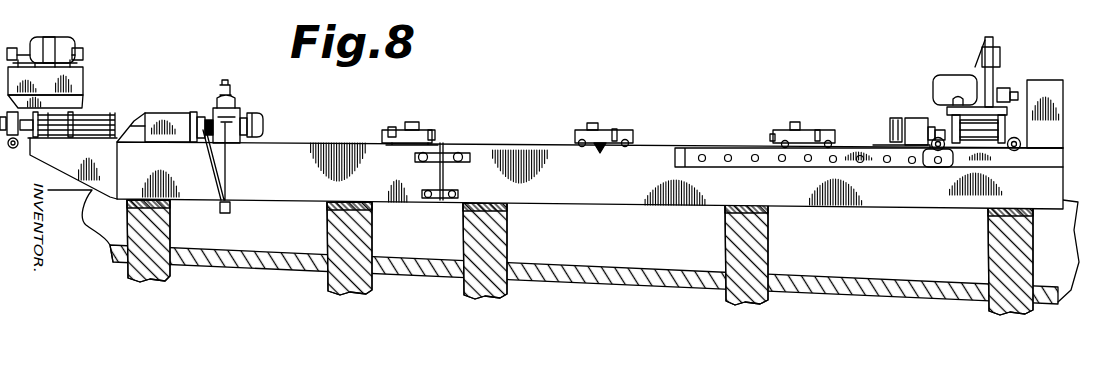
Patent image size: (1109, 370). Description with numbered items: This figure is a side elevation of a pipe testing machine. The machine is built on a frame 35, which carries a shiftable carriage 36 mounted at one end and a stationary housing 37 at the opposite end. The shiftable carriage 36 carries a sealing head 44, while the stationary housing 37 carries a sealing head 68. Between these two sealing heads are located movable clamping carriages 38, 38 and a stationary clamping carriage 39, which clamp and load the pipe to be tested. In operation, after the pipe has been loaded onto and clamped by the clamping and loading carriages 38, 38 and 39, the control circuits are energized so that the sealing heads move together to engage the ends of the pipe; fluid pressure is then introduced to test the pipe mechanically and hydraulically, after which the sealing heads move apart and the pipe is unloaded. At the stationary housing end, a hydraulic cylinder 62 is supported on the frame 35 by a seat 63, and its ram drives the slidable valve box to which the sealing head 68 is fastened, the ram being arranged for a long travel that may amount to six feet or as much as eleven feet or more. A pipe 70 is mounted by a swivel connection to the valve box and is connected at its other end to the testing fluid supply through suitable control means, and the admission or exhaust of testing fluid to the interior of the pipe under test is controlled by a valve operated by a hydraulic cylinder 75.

The frame 35 is at (540, 190).
The shiftable carriage 36 is at (922, 102).
The stationary housing 37 is at (158, 98).
The movable clamping carriages 38 is at (617, 118).
The stationary clamping carriage 39 is at (424, 112).
The sealing head 44 is at (895, 120).
The hydraulic cylinder 62 is at (88, 118).
The seat 63 is at (172, 123).
The sealing head 68 is at (260, 92).
The pipe 70 is at (227, 158).
The hydraulic cylinder 75 is at (223, 83).